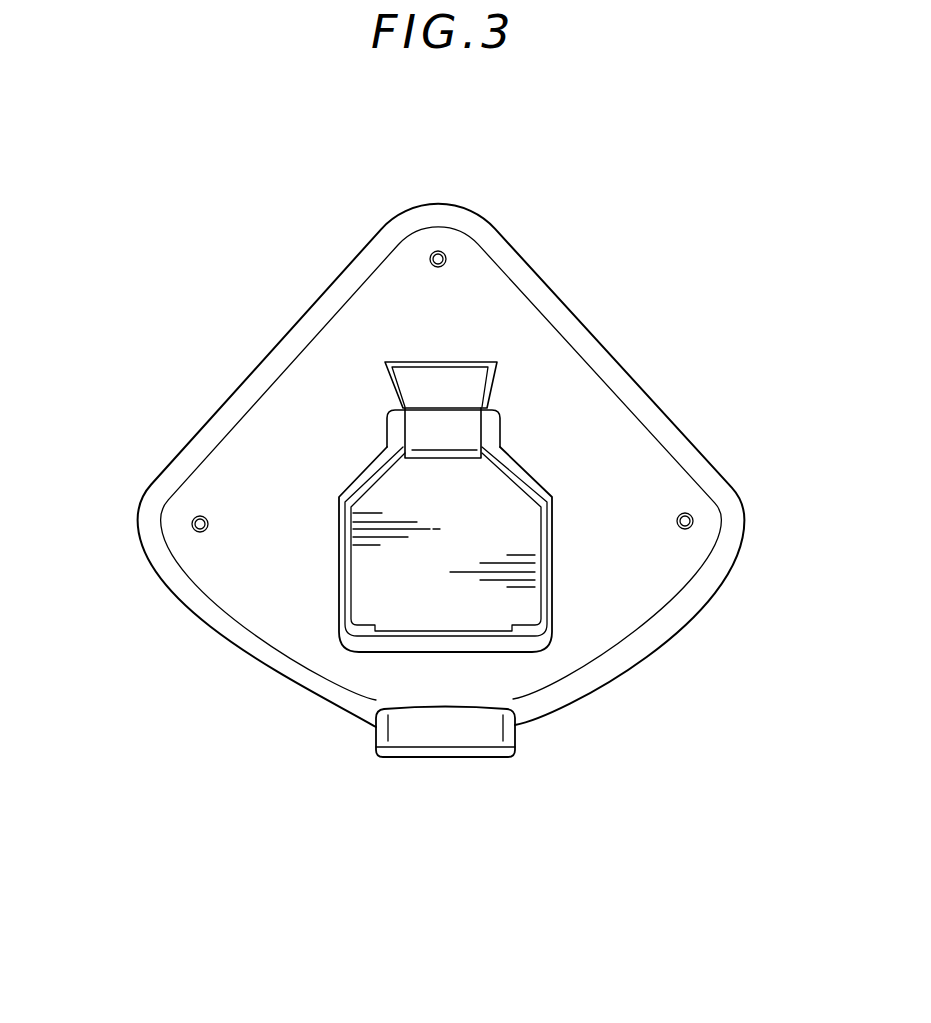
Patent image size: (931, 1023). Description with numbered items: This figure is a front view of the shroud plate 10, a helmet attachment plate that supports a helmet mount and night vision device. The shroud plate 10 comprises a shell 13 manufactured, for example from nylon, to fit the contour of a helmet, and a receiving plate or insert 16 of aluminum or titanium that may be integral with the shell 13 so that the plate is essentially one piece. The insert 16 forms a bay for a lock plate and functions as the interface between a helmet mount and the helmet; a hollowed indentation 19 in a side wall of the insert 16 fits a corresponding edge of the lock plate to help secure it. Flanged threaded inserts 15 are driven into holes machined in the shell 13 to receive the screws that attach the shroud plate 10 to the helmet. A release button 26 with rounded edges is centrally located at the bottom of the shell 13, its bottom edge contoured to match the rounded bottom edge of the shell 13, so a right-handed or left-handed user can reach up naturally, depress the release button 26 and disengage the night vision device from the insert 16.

The shroud plate 10 is at (244, 317).
The shell 13 is at (567, 402).
The flanged threaded inserts 15 is at (444, 253).
The insert 16 is at (457, 505).
The hollowed indentation 19 is at (407, 628).
The release button 26 is at (465, 733).